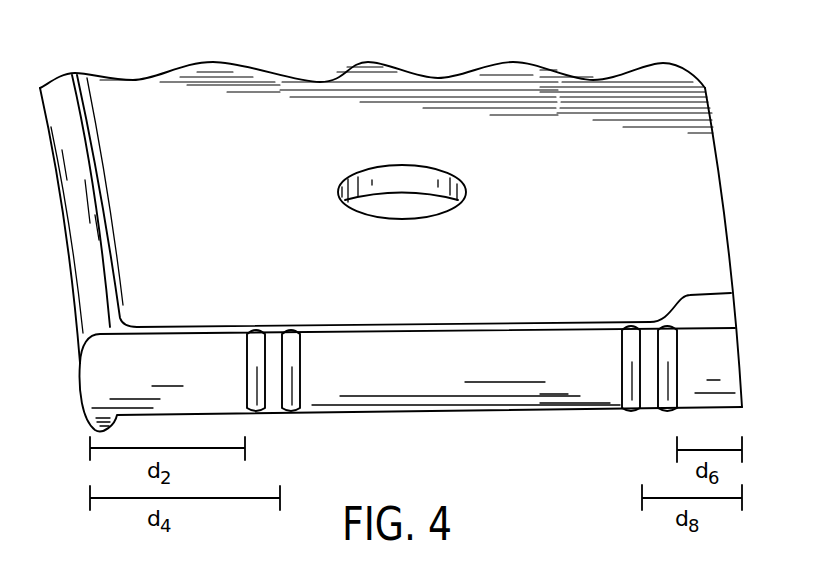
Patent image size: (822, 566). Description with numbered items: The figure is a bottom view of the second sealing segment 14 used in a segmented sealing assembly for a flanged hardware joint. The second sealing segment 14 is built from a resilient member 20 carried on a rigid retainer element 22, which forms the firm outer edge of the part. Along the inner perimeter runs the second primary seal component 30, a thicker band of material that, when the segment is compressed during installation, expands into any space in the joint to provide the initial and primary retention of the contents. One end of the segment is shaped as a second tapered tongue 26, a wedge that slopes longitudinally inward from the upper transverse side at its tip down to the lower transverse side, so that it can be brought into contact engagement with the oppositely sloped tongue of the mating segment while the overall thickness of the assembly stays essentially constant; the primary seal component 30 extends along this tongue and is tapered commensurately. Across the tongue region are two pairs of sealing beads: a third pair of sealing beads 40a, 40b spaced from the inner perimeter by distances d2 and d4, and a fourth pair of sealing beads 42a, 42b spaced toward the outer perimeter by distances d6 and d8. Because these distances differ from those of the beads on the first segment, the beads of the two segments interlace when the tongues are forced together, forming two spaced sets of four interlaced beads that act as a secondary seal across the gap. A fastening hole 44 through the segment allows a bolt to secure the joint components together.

The second sealing segment 14 is at (165, 60).
The resilient member 20 is at (737, 308).
The rigid retainer element 22 is at (724, 182).
The second tapered tongue 26 is at (468, 412).
The second primary seal component 30 is at (58, 192).
The sealing bead 40a is at (257, 336).
The sealing bead 40b is at (292, 334).
The sealing bead 42a is at (668, 328).
The sealing bead 42b is at (630, 330).
The fastening hole 44 is at (405, 205).